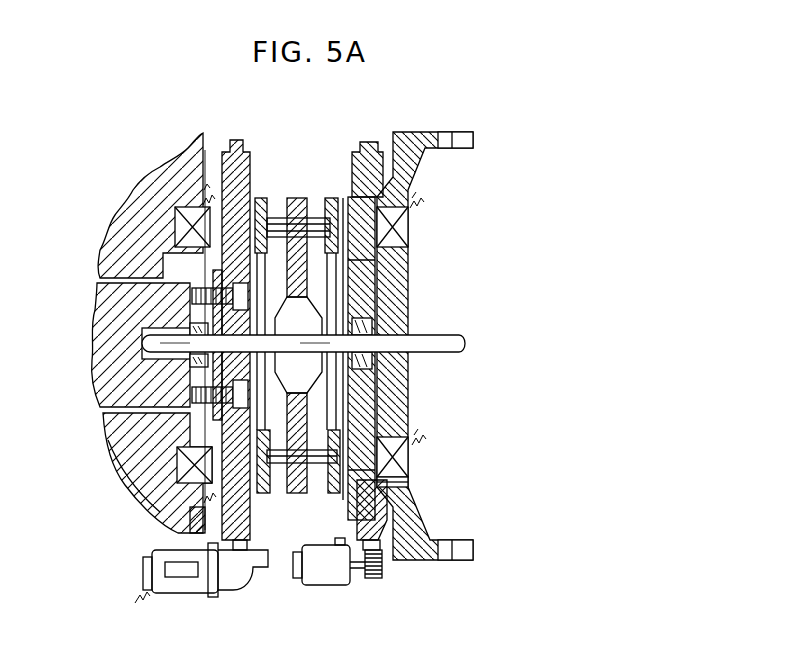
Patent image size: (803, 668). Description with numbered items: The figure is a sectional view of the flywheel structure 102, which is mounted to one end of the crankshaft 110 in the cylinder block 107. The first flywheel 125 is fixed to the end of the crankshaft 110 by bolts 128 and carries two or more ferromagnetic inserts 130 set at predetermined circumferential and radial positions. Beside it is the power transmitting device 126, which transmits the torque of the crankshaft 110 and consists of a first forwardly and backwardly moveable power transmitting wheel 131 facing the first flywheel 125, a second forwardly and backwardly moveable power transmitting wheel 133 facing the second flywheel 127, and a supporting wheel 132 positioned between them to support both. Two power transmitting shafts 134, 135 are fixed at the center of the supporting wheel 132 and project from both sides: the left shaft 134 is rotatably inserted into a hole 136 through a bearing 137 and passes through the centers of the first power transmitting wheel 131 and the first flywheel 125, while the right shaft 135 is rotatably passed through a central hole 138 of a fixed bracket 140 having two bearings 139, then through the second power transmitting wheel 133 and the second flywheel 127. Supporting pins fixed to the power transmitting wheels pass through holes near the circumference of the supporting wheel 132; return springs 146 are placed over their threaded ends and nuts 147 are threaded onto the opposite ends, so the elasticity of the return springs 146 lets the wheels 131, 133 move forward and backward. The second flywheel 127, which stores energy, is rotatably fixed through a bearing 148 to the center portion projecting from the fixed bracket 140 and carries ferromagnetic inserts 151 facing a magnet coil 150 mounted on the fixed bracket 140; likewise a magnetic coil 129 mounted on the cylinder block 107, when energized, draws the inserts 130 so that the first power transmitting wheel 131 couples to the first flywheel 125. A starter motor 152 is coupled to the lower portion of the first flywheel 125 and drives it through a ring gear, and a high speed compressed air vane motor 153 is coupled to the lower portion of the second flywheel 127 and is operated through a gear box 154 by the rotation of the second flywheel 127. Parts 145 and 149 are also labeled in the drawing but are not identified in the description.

The flywheel structure 102 is at (106, 180).
The cylinder block 107 is at (125, 440).
The crankshaft 110 is at (108, 354).
The first flywheel 125 is at (232, 545).
The power transmitting device 126 is at (287, 513).
The second flywheel 127 is at (374, 512).
The bolts 128 is at (105, 395).
The magnetic coil 129 is at (130, 468).
The ferromagnetic inserts 130 is at (195, 537).
The first power transmitting wheel 131 is at (265, 490).
The supporting wheel 132 is at (307, 487).
The second power transmitting wheel 133 is at (329, 493).
The left power transmitting shaft 134 is at (102, 378).
The right power transmitting shaft 135 is at (443, 343).
The hole 136 is at (138, 343).
The bearing 137 is at (97, 318).
The central hole 138 is at (405, 308).
The bearings 139 is at (400, 374).
The fixed bracket 140 is at (430, 550).
The disc 145 is at (247, 188).
The return springs 146 is at (280, 217).
The nuts 147 is at (276, 218).
The bearing 148 is at (372, 402).
The nut 149 is at (345, 200).
The magnet coil 150 is at (402, 463).
The ferromagnetic inserts 151 is at (398, 493).
The starter motor 152 is at (198, 588).
The high speed compressed air vane motor 153 is at (329, 580).
The gear box 154 is at (378, 580).